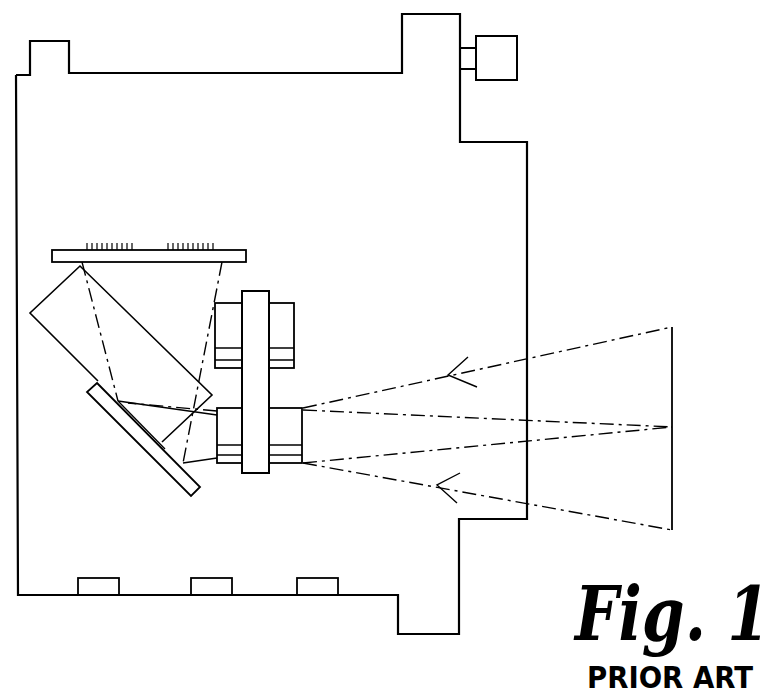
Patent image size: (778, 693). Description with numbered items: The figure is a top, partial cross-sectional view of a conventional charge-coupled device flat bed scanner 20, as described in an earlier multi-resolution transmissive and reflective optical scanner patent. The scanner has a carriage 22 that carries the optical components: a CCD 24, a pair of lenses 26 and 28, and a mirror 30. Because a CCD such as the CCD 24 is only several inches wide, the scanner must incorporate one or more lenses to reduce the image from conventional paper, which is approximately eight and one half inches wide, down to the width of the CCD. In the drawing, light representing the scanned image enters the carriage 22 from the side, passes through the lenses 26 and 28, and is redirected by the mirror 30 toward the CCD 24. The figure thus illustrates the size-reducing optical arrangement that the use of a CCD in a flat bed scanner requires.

The conventional scanner 20 is at (554, 145).
The carriage 22 is at (527, 273).
The CCD 24 is at (228, 250).
The lens 26 is at (295, 303).
The lens 28 is at (296, 407).
The mirror 30 is at (167, 473).